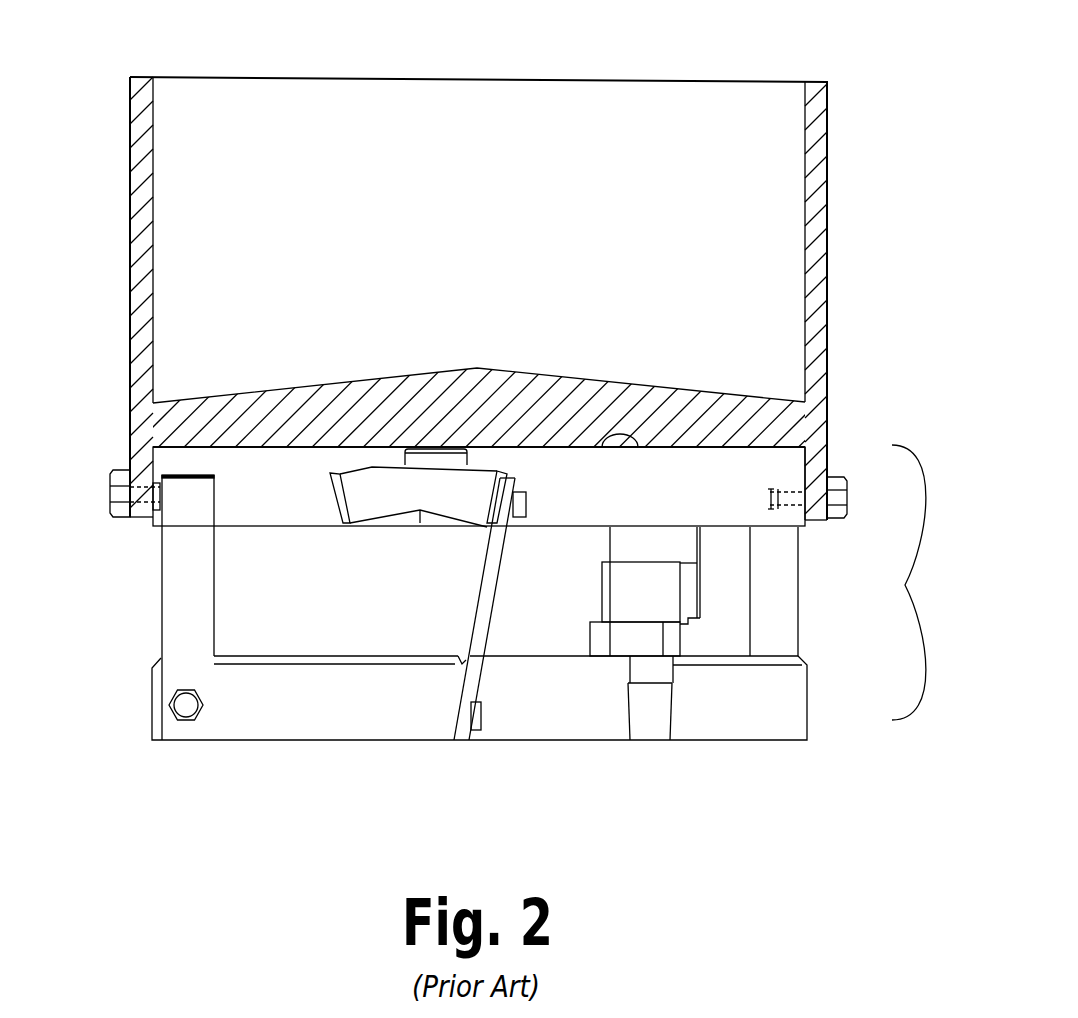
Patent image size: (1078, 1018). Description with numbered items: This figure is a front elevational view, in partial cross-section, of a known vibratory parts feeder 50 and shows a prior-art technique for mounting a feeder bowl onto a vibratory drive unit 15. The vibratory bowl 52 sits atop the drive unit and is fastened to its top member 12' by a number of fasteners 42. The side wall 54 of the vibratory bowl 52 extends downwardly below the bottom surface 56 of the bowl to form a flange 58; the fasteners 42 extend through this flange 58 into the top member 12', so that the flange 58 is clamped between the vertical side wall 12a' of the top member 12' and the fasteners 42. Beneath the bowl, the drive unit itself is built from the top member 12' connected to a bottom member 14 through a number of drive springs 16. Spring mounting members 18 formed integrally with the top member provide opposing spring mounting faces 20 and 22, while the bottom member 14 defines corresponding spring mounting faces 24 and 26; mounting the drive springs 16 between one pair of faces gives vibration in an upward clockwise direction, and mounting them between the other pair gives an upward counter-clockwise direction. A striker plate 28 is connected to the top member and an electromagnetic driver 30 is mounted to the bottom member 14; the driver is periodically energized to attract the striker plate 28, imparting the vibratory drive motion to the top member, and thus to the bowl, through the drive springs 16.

The vibratory parts feeder 50 is at (866, 175).
The vibratory bowl 52 is at (644, 54).
The side wall 54 is at (130, 172).
The bottom surface 56 is at (640, 447).
The flange 58 is at (152, 458).
The top member 12' is at (441, 507).
The vertical side wall 12a' is at (479, 472).
The fasteners 42 is at (123, 472).
The spring mounting members 18 is at (419, 486).
The spring mounting face 20 is at (488, 526).
The spring mounting face 22 is at (333, 503).
The spring mounting face 24 is at (456, 735).
The drive springs 16 is at (216, 590).
The striker plate 28 is at (700, 540).
The electromagnetic driver 30 is at (602, 591).
The bottom member 14 is at (808, 704).
The spring mounting face 26 is at (655, 722).
The vibratory drive unit 15 is at (923, 582).